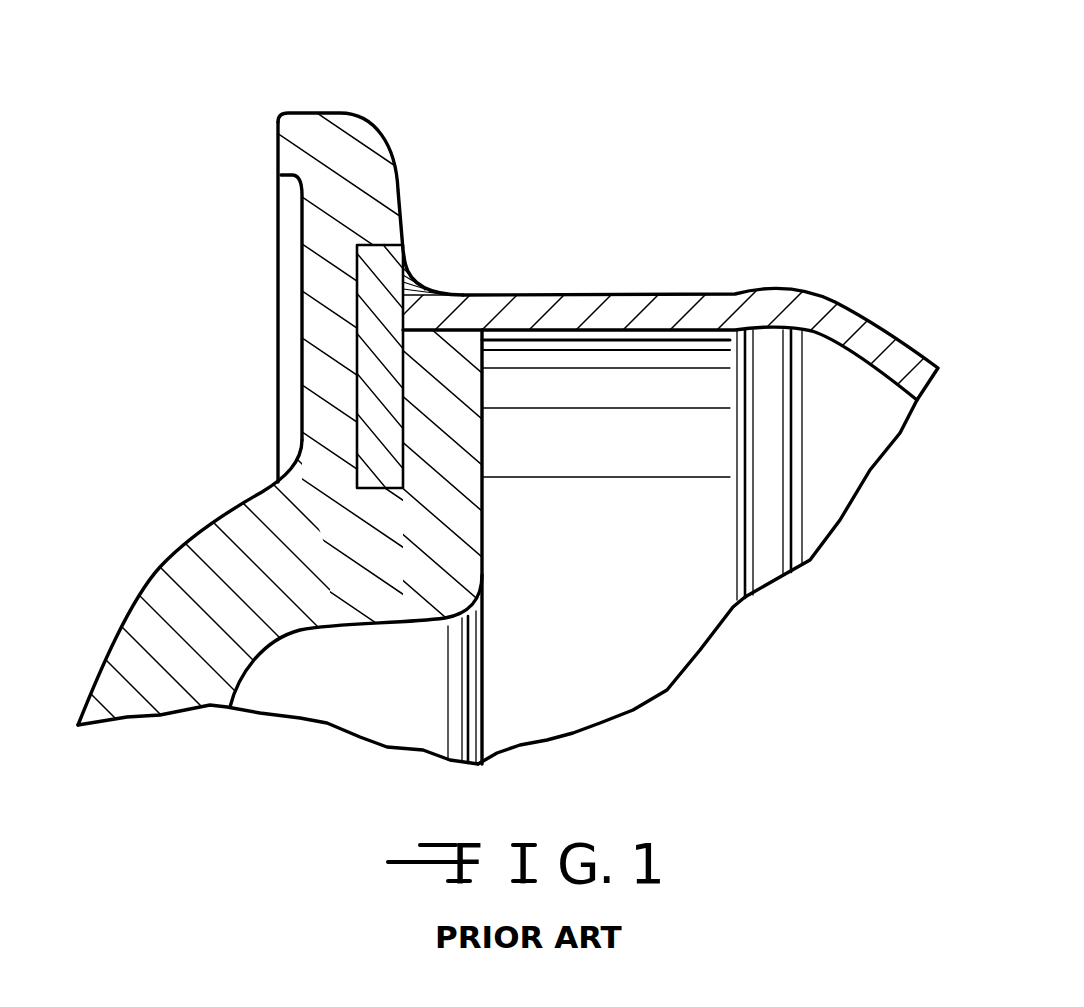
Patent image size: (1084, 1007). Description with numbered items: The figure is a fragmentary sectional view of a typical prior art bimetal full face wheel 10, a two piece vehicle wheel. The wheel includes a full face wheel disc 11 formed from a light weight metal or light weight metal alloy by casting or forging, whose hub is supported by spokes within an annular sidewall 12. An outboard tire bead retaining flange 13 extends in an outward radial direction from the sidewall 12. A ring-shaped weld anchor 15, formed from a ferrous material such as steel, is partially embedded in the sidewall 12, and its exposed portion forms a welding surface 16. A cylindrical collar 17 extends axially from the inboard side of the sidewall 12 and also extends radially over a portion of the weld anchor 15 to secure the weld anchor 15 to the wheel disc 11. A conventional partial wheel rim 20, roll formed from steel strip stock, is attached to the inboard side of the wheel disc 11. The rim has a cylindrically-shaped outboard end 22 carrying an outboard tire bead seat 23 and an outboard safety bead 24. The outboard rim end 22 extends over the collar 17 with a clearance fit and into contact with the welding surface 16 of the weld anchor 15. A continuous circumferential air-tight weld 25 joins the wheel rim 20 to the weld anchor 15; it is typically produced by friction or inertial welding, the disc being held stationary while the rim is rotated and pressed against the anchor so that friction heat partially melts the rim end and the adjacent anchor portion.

The bimetal full face wheel 10 is at (640, 108).
The full face wheel disc 11 is at (175, 560).
The annular sidewall 12 is at (313, 233).
The outboard tire bead retaining flange 13 is at (322, 142).
The weld anchor 15 is at (370, 307).
The welding surface 16 is at (404, 260).
The cylindrical collar 17 is at (460, 527).
The partial wheel rim 20 is at (903, 358).
The outboard end 22 is at (613, 317).
The outboard tire bead seat 23 is at (577, 297).
The outboard safety bead 24 is at (793, 288).
The air-tight weld 25 is at (425, 283).